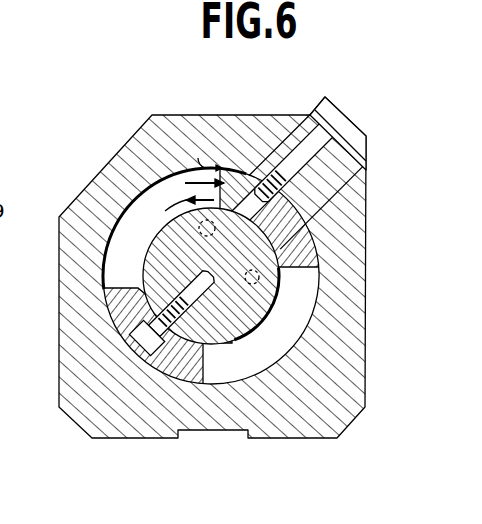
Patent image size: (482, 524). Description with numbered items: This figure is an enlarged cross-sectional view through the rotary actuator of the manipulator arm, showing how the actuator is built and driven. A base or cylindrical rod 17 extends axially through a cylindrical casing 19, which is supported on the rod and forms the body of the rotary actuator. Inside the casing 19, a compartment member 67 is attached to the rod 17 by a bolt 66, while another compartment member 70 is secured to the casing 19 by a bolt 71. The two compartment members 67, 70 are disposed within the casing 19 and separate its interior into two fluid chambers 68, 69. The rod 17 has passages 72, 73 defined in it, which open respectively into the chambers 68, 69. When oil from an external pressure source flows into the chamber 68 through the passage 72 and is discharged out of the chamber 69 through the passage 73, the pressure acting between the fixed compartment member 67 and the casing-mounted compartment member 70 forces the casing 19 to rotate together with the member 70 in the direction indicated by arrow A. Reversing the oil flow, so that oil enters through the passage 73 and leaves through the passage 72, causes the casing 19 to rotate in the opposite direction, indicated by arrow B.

The cylindrical rod 17 is at (236, 345).
The cylindrical casing 19 is at (82, 346).
The bolt 66 is at (143, 350).
The compartment member 67 is at (183, 360).
The fluid chamber 68 is at (173, 192).
The fluid chamber 69 is at (286, 348).
The compartment member 70 is at (252, 190).
The bolt 71 is at (349, 128).
The passage 72 is at (236, 192).
The passage 73 is at (259, 278).